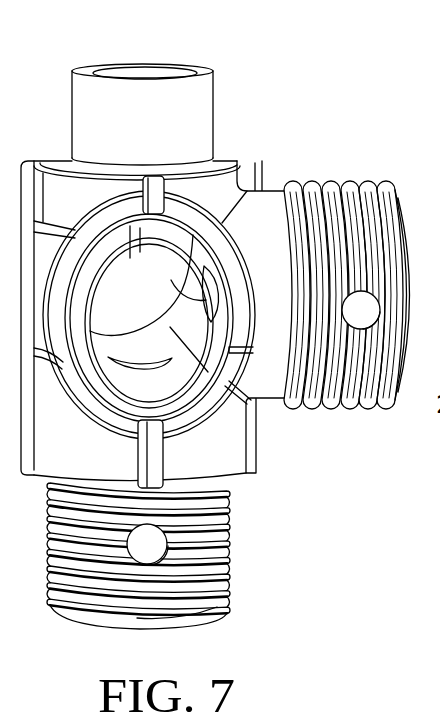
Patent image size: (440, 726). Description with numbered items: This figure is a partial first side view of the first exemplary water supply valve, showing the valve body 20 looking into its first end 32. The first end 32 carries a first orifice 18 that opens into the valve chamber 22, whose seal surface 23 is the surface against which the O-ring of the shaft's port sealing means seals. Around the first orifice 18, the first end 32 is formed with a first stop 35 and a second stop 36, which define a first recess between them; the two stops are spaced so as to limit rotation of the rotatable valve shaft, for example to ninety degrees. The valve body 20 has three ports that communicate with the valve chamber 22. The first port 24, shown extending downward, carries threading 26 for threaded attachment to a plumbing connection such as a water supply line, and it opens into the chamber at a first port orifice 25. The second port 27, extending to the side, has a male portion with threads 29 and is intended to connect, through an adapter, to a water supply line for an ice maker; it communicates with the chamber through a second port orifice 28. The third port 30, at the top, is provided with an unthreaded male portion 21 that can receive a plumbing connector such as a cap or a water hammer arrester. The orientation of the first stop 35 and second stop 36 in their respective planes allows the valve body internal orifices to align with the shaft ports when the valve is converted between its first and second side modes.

The first orifice 18 is at (250, 417).
The valve body 20 is at (292, 110).
The unthreaded male portion 21 is at (193, 130).
The valve chamber 22 is at (222, 386).
The seal surface 23 is at (180, 322).
The first port 24 is at (188, 621).
The first port orifice 25 is at (145, 360).
The threading 26 is at (222, 546).
The second port 27 is at (408, 207).
The second port orifice 28 is at (190, 298).
The threads 29 is at (350, 184).
The third port 30 is at (199, 68).
The first end 32 is at (246, 406).
The first stop 35 is at (234, 244).
The second stop 36 is at (245, 346).